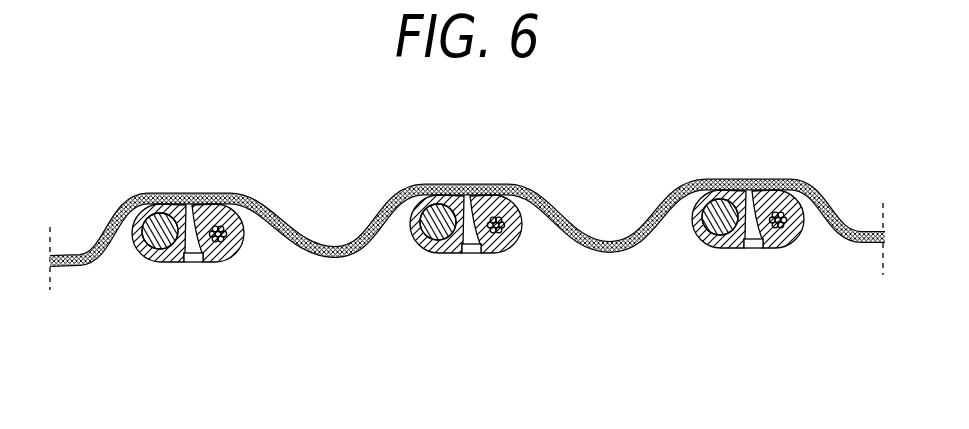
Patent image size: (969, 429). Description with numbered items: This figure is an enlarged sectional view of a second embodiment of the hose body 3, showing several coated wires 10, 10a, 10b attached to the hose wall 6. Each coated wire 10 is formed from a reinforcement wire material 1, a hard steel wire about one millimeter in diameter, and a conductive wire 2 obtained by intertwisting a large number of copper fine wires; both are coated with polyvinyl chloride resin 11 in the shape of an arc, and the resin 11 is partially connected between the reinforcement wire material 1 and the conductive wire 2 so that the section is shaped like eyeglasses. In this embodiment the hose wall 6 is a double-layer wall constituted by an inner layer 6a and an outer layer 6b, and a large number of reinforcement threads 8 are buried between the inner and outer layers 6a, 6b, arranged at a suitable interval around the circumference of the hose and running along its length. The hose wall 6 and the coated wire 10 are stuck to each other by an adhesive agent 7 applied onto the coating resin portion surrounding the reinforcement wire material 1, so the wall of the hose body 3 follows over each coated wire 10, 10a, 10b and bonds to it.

The reinforcement wire material 1 is at (713, 250).
The conductive wire 2 is at (782, 249).
The hose body 3 is at (467, 225).
The hose wall 6 is at (467, 243).
The inner layer 6a is at (602, 252).
The outer layer 6b is at (622, 249).
The adhesive agent 7 is at (440, 187).
The reinforcement threads 8 is at (565, 243).
The coated wire 10 is at (752, 281).
The first conductor module 10a is at (183, 290).
The second conductor module 10b is at (459, 287).
The polyvinyl chloride resin 11 is at (438, 253).